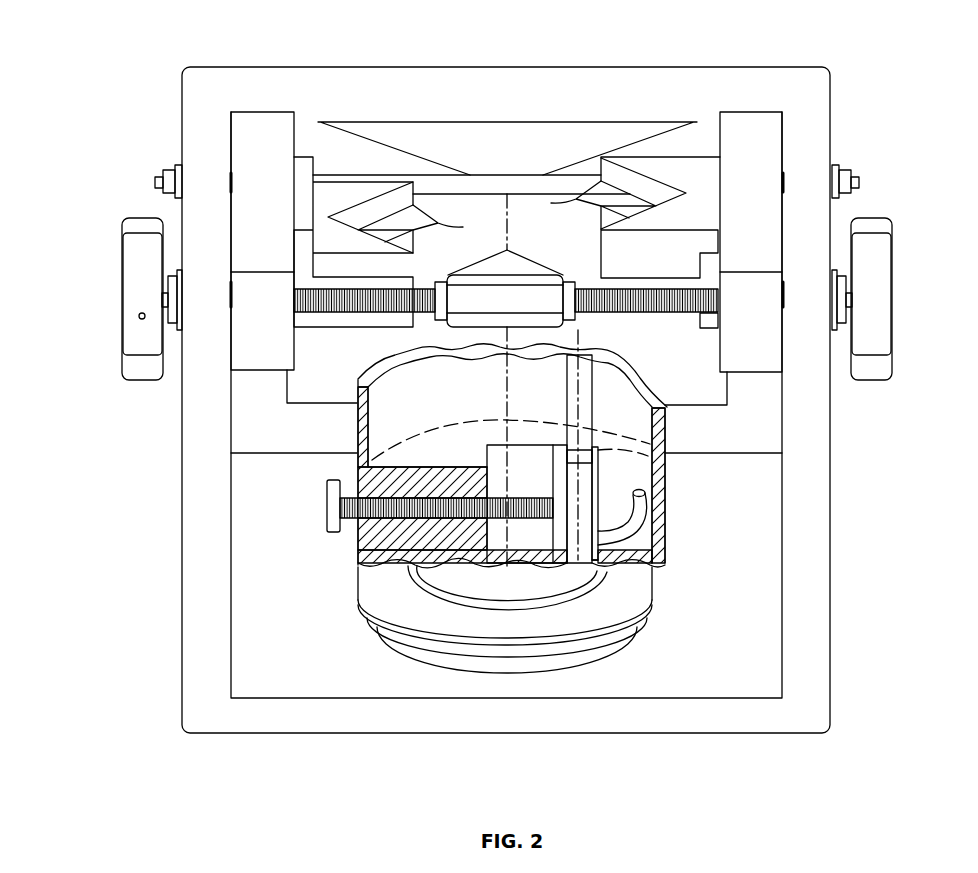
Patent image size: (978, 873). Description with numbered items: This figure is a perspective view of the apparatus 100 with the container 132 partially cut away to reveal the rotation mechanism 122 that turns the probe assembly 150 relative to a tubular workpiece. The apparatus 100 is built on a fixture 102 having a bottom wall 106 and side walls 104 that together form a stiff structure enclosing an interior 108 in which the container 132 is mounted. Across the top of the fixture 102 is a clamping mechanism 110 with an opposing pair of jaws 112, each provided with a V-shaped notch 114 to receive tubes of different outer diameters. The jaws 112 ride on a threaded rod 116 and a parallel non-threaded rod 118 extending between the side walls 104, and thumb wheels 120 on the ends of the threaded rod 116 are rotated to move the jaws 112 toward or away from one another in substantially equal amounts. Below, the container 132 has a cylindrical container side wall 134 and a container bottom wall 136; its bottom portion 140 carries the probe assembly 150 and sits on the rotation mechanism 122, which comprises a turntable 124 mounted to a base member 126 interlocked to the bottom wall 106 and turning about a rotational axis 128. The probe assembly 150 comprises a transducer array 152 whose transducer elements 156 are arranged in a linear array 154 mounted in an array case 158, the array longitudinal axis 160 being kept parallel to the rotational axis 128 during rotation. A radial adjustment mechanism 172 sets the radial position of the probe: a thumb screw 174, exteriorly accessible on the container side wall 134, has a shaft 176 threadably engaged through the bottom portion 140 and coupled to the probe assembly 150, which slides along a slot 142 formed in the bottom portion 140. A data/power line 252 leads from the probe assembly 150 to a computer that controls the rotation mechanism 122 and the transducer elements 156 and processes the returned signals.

The apparatus 100 is at (204, 66).
The fixture 102 is at (272, 65).
The side walls 104 is at (203, 212).
The bottom wall 106 is at (250, 727).
The interior 108 is at (740, 656).
The clamping mechanism 110 is at (762, 160).
The jaws 112 is at (270, 146).
The V-shaped notch 114 is at (380, 203).
The threaded rod 116 is at (323, 310).
The non-threaded rod 118 is at (443, 180).
The thumb wheels 120 is at (120, 278).
The rotation mechanism 122 is at (377, 628).
The turntable 124 is at (430, 647).
The base member 126 is at (467, 653).
The rotational axis 128 is at (505, 388).
The container 132 is at (355, 398).
The container side wall 134 is at (353, 428).
The container bottom wall 136 is at (593, 560).
The bottom portion 140 is at (357, 567).
The slot 142 is at (525, 530).
The probe assembly 150 is at (565, 557).
The transducer array 152 is at (663, 410).
The linear array 154 is at (663, 437).
The transducer elements 156 is at (598, 450).
The array case 158 is at (665, 493).
The array longitudinal axis 160 is at (582, 338).
The radial adjustment mechanism 172 is at (330, 483).
The thumb screw 174 is at (337, 513).
The shaft 176 is at (362, 535).
The data/power line 252 is at (633, 508).